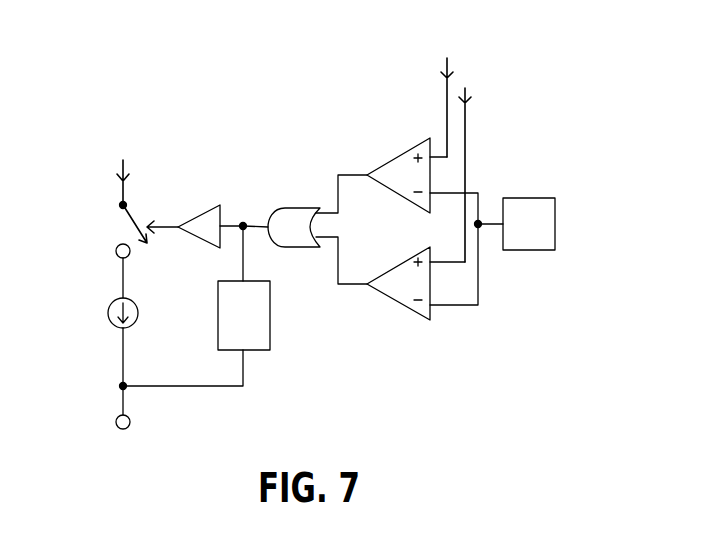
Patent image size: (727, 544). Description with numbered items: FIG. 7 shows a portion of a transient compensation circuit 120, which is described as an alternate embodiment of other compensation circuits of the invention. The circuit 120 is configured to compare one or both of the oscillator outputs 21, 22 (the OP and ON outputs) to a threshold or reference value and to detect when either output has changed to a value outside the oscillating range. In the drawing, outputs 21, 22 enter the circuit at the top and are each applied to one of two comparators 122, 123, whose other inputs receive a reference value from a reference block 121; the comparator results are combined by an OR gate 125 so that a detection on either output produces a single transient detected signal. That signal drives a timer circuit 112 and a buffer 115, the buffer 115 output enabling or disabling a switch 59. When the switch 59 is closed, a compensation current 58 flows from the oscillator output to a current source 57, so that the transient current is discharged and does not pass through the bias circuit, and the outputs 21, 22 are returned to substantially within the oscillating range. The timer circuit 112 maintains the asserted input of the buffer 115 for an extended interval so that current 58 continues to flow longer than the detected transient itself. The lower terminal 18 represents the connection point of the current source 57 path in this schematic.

The current 58 is at (128, 178).
The switch 59 is at (118, 222).
The current source 57 is at (108, 310).
The output terminal 18 is at (117, 426).
The buffer 115 is at (200, 246).
The timer circuit 112 is at (270, 330).
The OR gate 125 is at (300, 207).
The first comparator 122 is at (408, 200).
The second comparator 123 is at (400, 302).
The reference voltage source 121 is at (540, 251).
The output 21 is at (447, 100).
The output 22 is at (465, 120).
The transient compensation circuit 120 is at (478, 408).